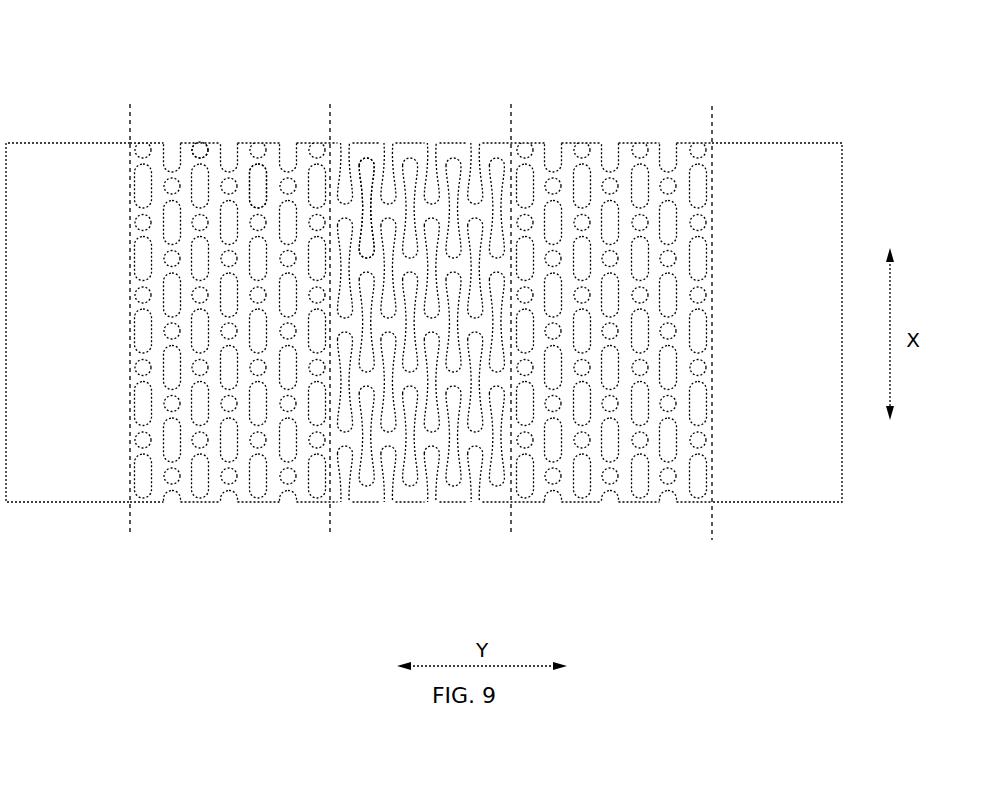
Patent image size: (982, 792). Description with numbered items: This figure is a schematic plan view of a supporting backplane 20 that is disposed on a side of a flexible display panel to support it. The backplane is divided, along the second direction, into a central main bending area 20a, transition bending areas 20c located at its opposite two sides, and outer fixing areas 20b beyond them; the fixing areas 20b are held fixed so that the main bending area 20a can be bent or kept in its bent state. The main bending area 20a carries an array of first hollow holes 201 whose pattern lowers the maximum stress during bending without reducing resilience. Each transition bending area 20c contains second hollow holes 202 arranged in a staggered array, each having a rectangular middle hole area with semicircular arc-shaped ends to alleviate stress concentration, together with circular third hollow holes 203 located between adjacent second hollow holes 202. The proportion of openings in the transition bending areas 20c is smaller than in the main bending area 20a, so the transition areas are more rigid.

The supporting backplane 20 is at (61, 55).
The main bending area 20a is at (449, 528).
The fixing area 20b is at (52, 522).
The transition bending area 20c is at (229, 525).
The first hollow hole 201 is at (364, 165).
The second hollow hole 202 is at (264, 180).
The third hollow hole 203 is at (200, 150).